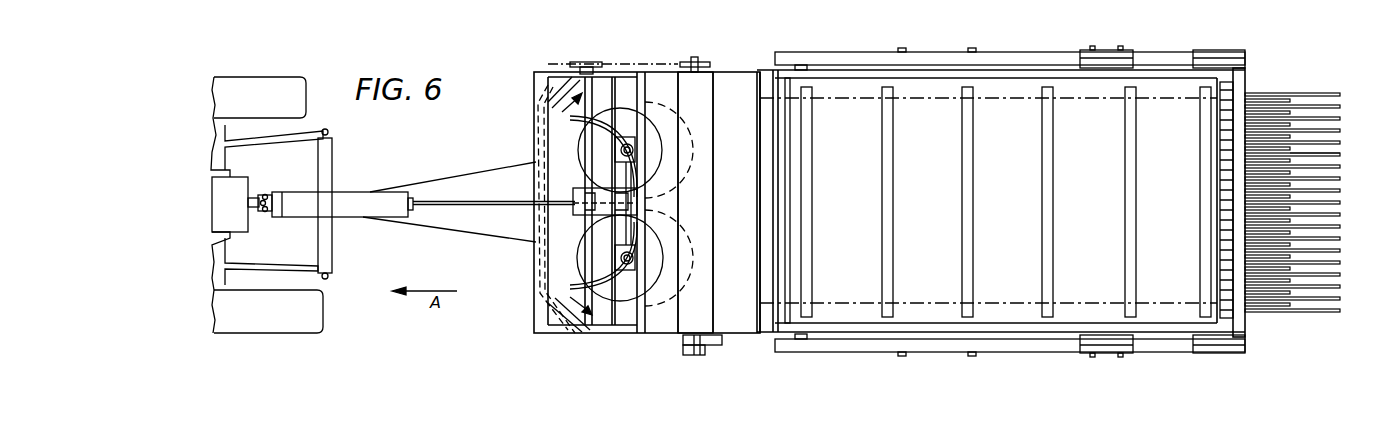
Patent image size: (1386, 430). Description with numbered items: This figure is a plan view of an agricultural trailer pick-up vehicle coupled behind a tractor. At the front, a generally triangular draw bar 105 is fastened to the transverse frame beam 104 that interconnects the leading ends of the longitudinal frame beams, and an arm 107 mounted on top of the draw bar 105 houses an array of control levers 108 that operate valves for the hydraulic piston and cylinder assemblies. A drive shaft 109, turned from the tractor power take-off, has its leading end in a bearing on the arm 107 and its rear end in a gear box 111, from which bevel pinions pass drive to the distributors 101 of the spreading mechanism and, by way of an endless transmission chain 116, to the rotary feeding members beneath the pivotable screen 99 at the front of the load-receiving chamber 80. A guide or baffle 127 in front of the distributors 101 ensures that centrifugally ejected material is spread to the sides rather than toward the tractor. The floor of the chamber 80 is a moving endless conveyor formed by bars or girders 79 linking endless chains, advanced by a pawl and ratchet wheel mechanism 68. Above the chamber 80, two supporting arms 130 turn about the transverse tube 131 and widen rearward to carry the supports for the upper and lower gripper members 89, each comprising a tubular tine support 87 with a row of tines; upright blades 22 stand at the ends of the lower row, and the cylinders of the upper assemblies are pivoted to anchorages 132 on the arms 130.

The upright blades 22 is at (1258, 80).
The pawl and ratchet wheel mechanism 68 is at (723, 349).
The bars or girders 79 is at (893, 285).
The load-receiving chamber 80 is at (1014, 211).
The tine support 87 is at (1247, 353).
The gripper member 89 is at (1345, 153).
The pivotable screen 99 is at (727, 78).
The distributors 101 is at (540, 146).
The frame beam 104 is at (536, 97).
The draw bar 105 is at (438, 235).
The arm 107 is at (369, 218).
The control levers 108 is at (276, 212).
The shaft 109 is at (446, 198).
The gear box 111 is at (573, 206).
The endless transmission chain 116 is at (632, 64).
The guide or baffle 127 is at (540, 272).
The supporting arms 130 is at (940, 58).
The tube 131 is at (787, 173).
The anchorages 132 is at (1108, 46).